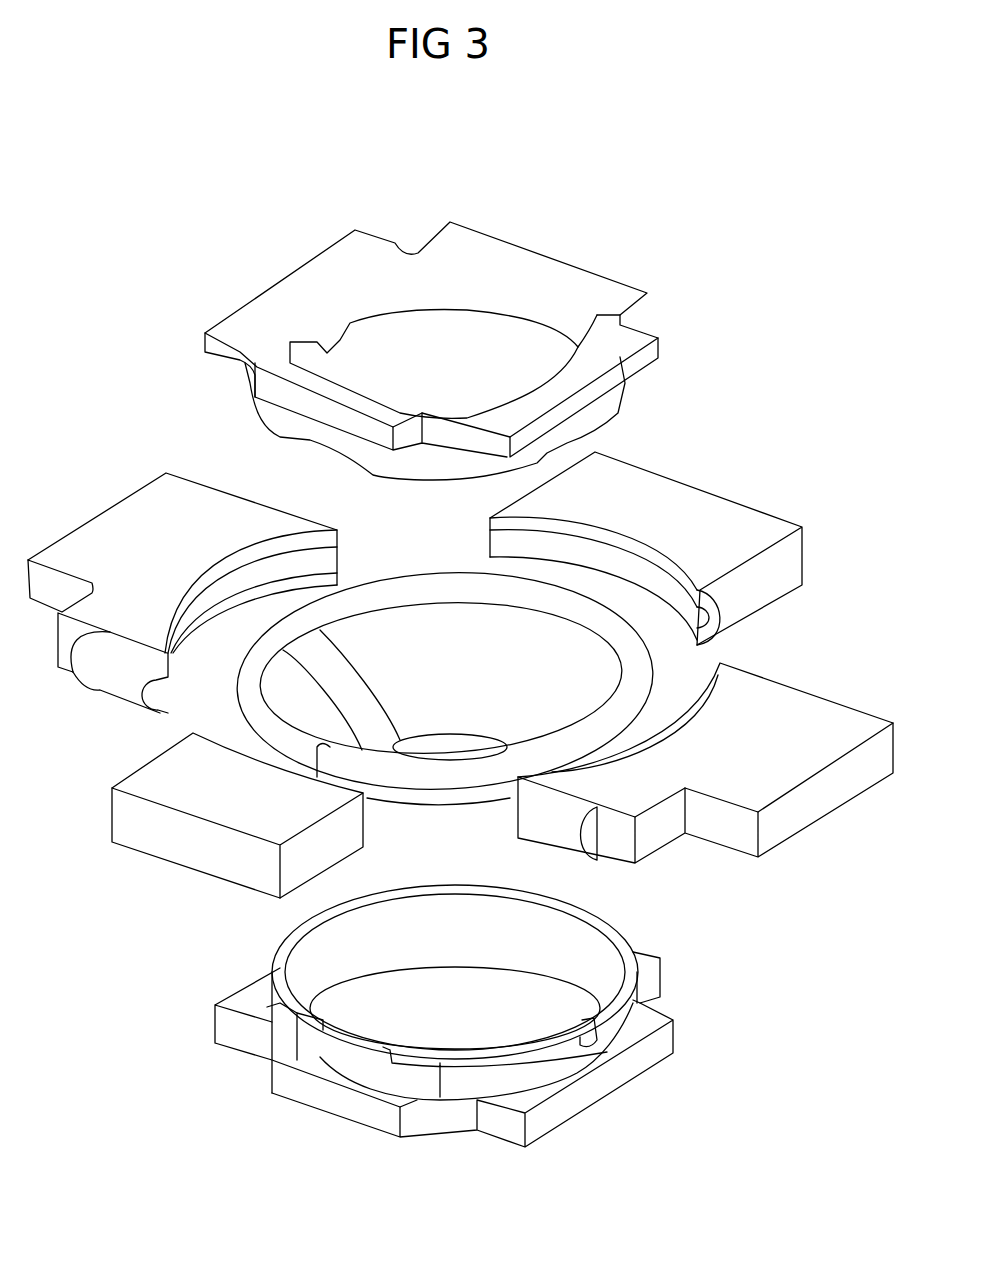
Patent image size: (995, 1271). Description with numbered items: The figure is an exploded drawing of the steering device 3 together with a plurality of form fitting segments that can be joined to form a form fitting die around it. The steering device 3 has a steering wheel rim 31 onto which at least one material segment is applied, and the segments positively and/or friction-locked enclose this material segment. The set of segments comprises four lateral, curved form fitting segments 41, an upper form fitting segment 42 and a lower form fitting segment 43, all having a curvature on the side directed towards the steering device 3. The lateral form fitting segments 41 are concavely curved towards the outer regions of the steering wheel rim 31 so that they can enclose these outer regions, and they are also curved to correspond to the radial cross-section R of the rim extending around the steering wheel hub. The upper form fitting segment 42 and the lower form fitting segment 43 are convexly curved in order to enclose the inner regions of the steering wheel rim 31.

The steering device 3 is at (493, 720).
The steering wheel rim 31 is at (655, 680).
The lateral form fitting segment 41 is at (163, 479).
The upper form fitting segment 42 is at (518, 253).
The lower form fitting segment 43 is at (638, 1055).
The radial cross-section R is at (323, 743).